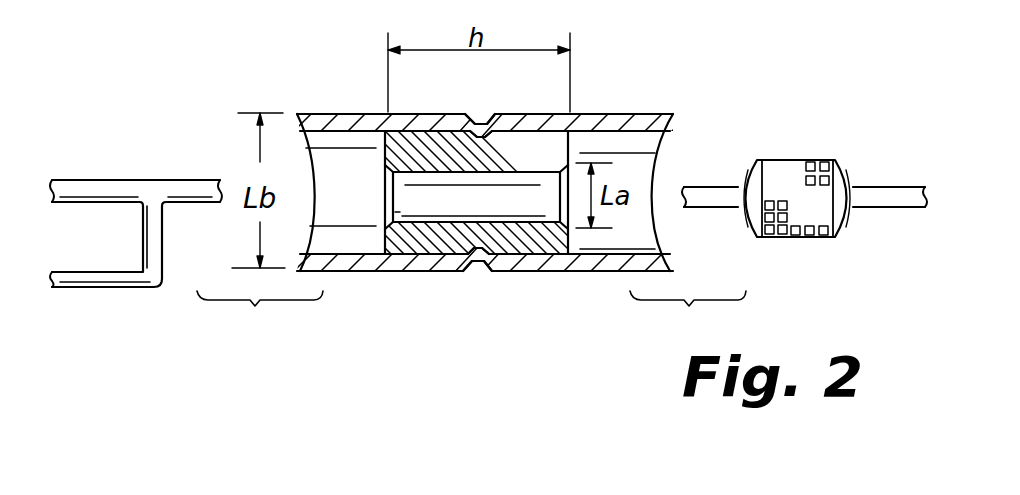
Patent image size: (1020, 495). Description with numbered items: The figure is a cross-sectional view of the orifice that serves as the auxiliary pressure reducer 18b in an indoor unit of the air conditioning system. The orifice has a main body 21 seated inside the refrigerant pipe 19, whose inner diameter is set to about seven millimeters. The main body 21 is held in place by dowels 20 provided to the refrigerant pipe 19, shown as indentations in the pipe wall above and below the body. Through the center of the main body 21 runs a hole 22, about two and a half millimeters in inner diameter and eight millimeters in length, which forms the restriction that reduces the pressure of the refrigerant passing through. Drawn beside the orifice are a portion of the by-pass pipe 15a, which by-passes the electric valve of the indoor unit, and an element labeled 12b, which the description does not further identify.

The electronic component (capacitor/diode) with leads 12b is at (791, 160).
The lead frame terminal piece 15a is at (109, 283).
The tubular lead assembly 18b is at (474, 212).
The metal tube 19 is at (613, 112).
The notch / crimp groove 20 is at (483, 124).
The insert sleeve 21 is at (396, 252).
The bore of insert sleeve 22 is at (535, 206).